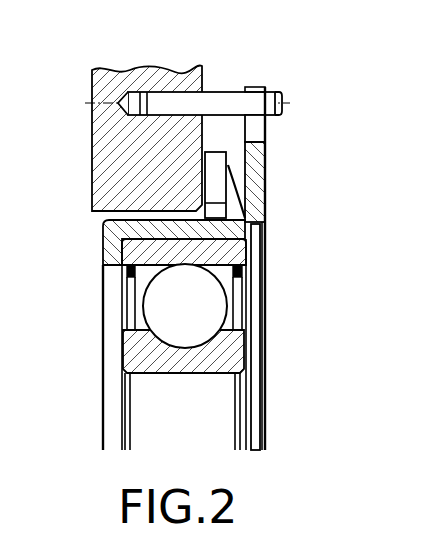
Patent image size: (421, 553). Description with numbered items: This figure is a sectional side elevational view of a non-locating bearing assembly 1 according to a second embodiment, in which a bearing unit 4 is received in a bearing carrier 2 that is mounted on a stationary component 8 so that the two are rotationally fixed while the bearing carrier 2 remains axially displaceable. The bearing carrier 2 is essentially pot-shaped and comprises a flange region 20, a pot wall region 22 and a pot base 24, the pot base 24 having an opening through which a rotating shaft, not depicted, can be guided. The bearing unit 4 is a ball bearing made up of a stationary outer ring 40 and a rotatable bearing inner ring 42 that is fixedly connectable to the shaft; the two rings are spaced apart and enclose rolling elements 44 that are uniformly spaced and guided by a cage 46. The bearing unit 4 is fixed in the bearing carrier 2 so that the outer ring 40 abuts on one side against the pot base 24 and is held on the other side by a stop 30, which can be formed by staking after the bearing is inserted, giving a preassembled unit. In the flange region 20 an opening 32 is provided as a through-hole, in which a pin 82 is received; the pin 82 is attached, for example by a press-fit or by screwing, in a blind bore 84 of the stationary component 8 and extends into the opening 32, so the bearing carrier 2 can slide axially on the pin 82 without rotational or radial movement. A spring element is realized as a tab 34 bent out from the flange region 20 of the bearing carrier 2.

The non-locating bearing assembly 1 is at (188, 36).
The bearing carrier 2 is at (258, 209).
The bearing unit 4 is at (275, 318).
The stationary component 8 is at (106, 123).
The flange region 20 is at (258, 152).
The pot wall region 22 is at (162, 227).
The pot base 24 is at (113, 262).
The stop 30 is at (250, 240).
The opening 32 is at (257, 128).
The tab 34 is at (210, 178).
The outer ring 40 is at (233, 262).
The bearing inner ring 42 is at (227, 370).
The rolling elements 44 is at (185, 347).
The cage 46 is at (140, 308).
The pin 82 is at (229, 103).
The blind bore 84 is at (137, 103).